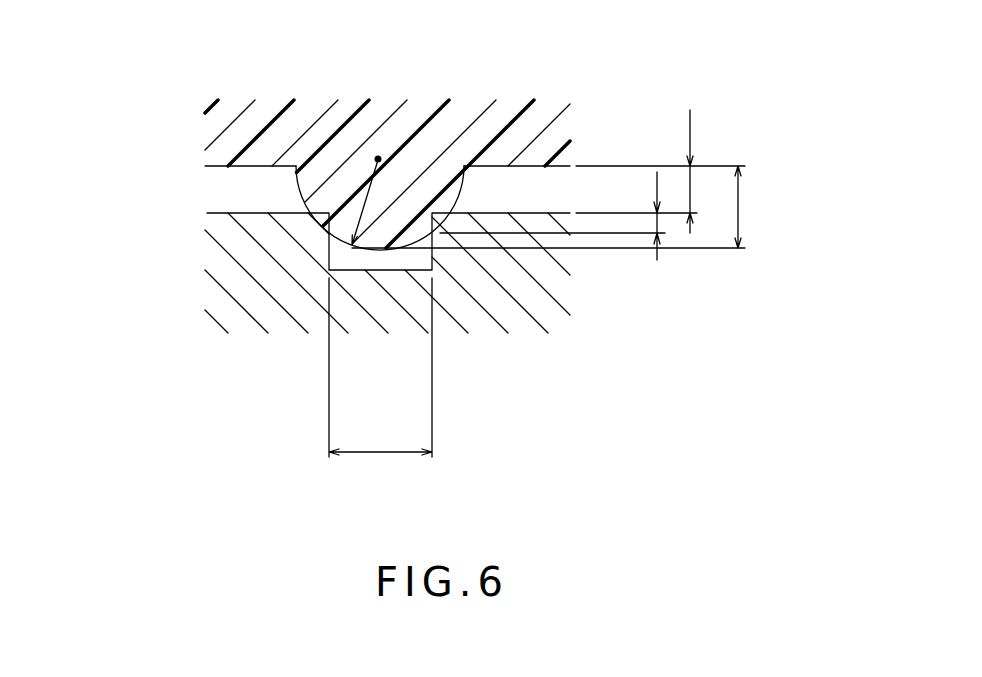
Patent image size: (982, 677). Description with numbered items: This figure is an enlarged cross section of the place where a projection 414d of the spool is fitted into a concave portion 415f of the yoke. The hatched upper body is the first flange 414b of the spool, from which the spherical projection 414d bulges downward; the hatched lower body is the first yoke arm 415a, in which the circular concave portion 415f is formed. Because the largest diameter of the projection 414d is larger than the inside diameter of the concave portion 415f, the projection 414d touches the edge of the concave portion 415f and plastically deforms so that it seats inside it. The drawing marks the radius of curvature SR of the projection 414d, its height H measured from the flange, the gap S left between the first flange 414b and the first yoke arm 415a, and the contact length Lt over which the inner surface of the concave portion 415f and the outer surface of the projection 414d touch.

The first flange 414b is at (232, 133).
The projection 414d is at (435, 197).
The first yoke arm 415a is at (238, 288).
The concave portion 415f is at (384, 270).
The radius of curvature SR is at (352, 201).
The gap S is at (548, 179).
The contact length Lt is at (643, 215).
The height of projection H is at (726, 207).